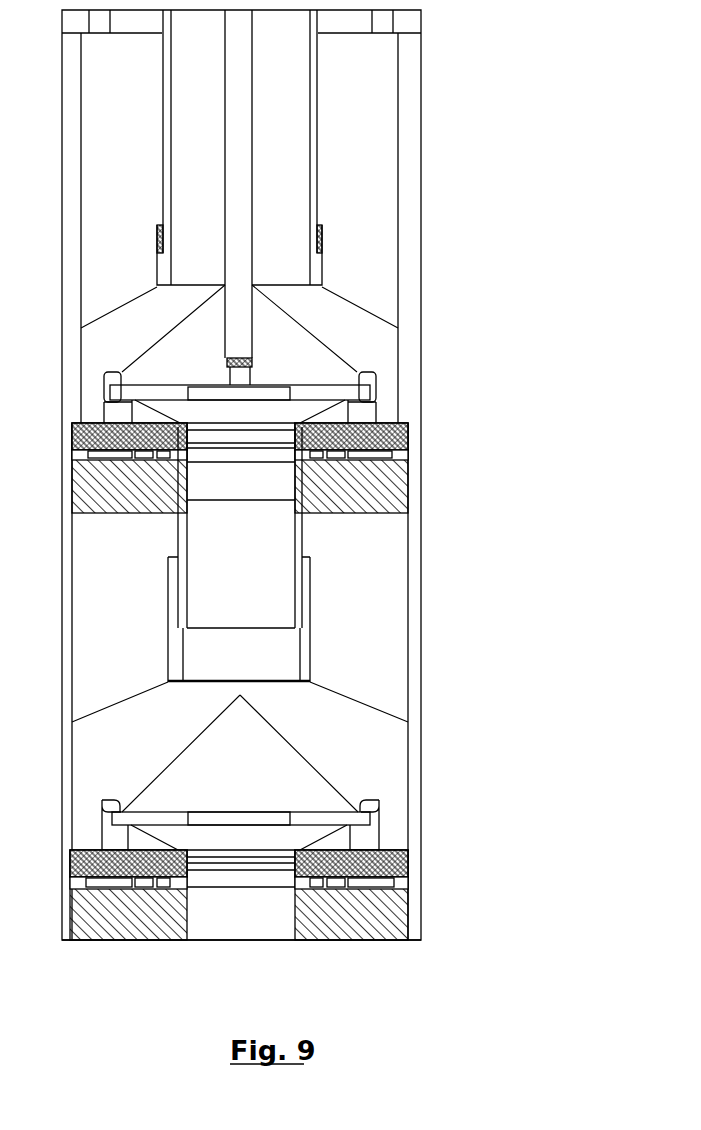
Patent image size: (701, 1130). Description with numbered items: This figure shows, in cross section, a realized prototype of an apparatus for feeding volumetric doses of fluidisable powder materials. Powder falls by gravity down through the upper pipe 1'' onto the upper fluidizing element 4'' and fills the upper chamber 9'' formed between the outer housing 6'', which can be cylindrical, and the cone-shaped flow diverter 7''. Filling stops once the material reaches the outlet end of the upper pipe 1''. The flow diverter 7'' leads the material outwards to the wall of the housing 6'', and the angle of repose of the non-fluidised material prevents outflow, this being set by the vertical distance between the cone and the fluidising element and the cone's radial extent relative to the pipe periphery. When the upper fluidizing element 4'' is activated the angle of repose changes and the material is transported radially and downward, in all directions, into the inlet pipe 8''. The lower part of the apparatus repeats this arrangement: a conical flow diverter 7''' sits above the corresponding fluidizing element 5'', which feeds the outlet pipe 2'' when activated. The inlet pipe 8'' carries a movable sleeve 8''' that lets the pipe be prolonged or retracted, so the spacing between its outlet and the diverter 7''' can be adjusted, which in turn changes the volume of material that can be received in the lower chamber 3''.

The upper pipe 1'' is at (362, 184).
The outer housing 6'' is at (314, 475).
The upper chamber 9'' is at (324, 307).
The flow diverter 7'' is at (335, 354).
The upper fluidizing element 4'' is at (319, 468).
The inlet pipe 8'' is at (372, 553).
The movable sleeve 8''' is at (370, 619).
The chamber 3'' is at (319, 711).
The conical flow diverter 7''' is at (337, 772).
The fluidizing element 5'' is at (318, 895).
The outlet pipe 2'' is at (314, 957).